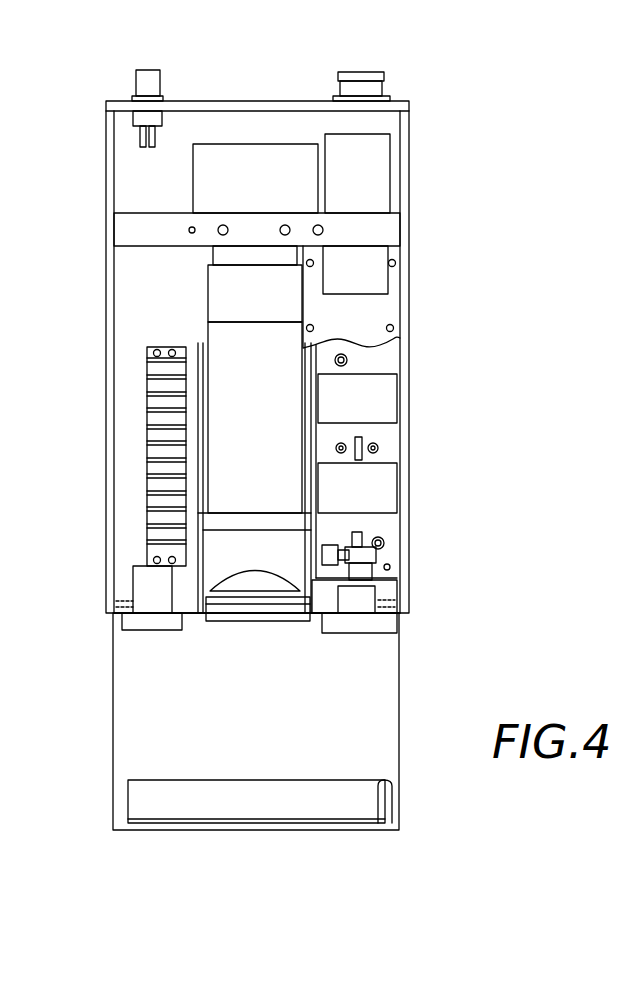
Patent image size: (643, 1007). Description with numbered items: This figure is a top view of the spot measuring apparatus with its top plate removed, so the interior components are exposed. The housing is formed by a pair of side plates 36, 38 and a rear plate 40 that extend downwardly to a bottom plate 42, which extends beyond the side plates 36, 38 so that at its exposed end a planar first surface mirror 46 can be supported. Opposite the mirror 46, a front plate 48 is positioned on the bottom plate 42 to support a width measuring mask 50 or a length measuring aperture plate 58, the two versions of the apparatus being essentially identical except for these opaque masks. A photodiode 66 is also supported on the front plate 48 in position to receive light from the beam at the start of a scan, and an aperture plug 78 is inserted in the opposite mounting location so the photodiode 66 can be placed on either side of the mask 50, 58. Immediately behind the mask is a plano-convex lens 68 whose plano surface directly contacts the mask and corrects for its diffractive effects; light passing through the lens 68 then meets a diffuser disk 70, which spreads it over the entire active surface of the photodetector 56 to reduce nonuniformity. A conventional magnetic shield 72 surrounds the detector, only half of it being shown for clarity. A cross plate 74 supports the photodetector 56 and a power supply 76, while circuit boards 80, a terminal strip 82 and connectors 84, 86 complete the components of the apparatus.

The side plate 36 is at (108, 434).
The side plate 38 is at (405, 410).
The rear plate 40 is at (265, 105).
The bottom plate 42 is at (360, 702).
The first surface mirror 46 is at (360, 800).
The front plate 48 is at (115, 589).
The width measuring mask 50 is at (237, 600).
The length measuring aperture plate 58 is at (237, 598).
The photodetector 56 is at (255, 284).
The photodiode 66 is at (362, 605).
The plano-convex lens 68 is at (253, 580).
The diffuser disk 70 is at (245, 520).
The magnetic shield 72 is at (400, 338).
The cross plate 74 is at (380, 232).
The power supply 76 is at (357, 173).
The aperture plug 78 is at (150, 605).
The circuit boards 80 is at (379, 450).
The terminal strip 82 is at (160, 478).
The connector 84 is at (148, 80).
The connector 86 is at (378, 93).